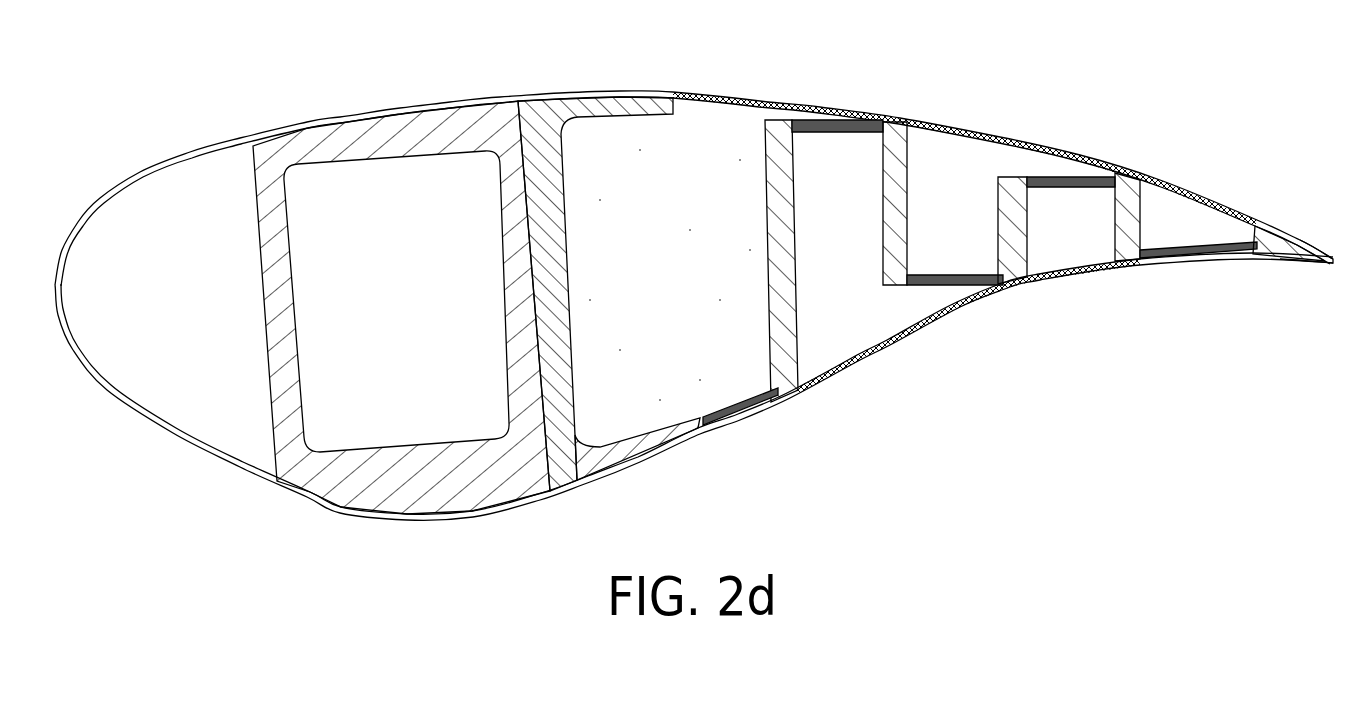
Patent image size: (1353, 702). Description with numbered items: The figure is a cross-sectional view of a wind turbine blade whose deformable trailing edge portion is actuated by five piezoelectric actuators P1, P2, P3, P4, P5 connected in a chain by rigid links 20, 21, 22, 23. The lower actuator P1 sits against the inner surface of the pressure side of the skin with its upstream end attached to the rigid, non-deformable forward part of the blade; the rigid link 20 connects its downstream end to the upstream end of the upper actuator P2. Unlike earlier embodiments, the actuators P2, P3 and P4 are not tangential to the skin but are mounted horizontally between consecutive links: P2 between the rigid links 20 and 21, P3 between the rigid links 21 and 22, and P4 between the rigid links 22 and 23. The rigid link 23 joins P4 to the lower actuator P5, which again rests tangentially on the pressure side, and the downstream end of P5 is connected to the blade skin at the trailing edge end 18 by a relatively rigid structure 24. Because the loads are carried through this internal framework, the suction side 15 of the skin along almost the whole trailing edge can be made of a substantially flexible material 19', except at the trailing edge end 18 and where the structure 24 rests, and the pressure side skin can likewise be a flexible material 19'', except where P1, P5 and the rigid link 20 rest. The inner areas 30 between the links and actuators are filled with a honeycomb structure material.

The suction side 15 is at (1128, 73).
The trailing edge end 18 is at (1337, 266).
The flexible material 19' is at (965, 116).
The flexible material 19'' is at (968, 365).
The rigid link 20 is at (790, 342).
The rigid link 21 is at (898, 150).
The rigid link 22 is at (1025, 250).
The rigid link 23 is at (1143, 213).
The rigid structure 24 is at (1277, 233).
The inner areas 30 is at (625, 180).
The piezoelectric actuator P1 is at (737, 418).
The piezoelectric actuator P2 is at (829, 128).
The piezoelectric actuator P3 is at (957, 286).
The piezoelectric actuator P4 is at (1063, 182).
The piezoelectric actuator P5 is at (1193, 258).